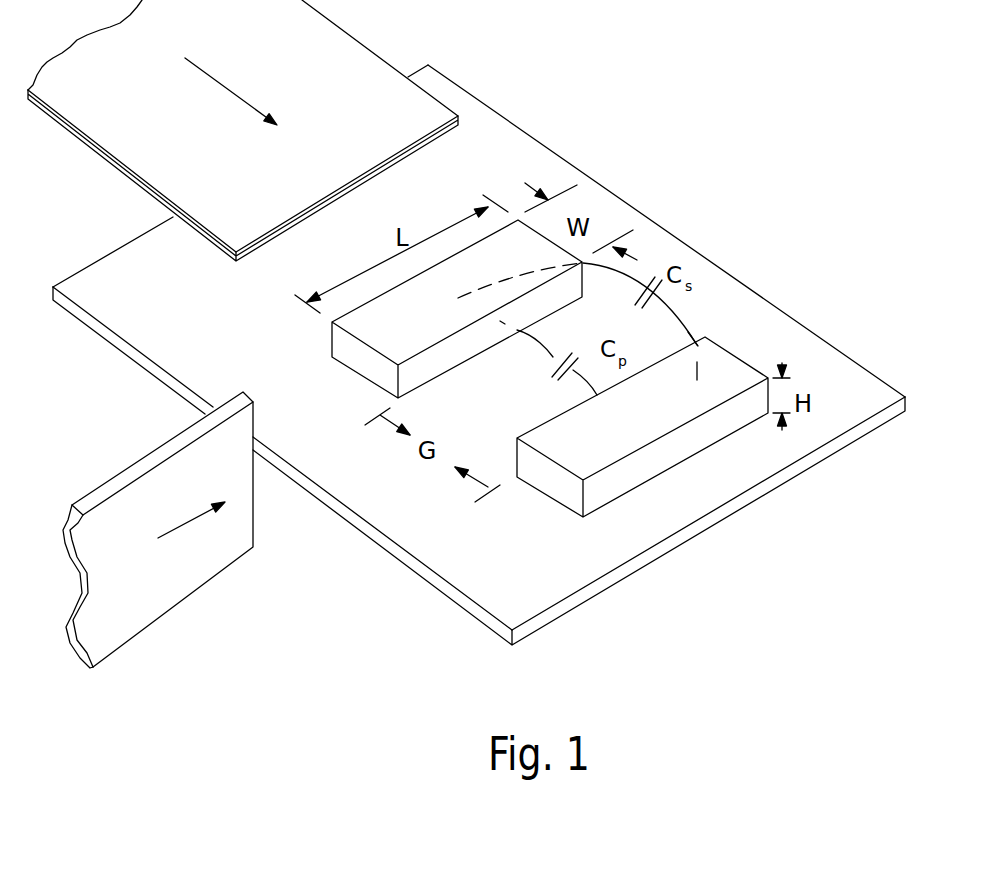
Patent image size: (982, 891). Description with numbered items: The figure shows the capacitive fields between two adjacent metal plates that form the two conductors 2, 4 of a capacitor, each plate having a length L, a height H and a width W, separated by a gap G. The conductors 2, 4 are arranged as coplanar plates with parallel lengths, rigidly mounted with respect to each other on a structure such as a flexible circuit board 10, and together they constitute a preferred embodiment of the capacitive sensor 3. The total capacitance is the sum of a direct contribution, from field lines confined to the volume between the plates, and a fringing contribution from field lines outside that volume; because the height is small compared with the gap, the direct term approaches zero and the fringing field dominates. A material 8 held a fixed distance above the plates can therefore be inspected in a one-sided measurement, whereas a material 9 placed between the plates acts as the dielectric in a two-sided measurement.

The conductor 2 is at (746, 354).
The capacitive sensor 3 is at (310, 594).
The conductor 4 is at (600, 146).
The material 8 is at (243, 130).
The material to be inspected 9 is at (158, 530).
The flexible circuit board 10 is at (479, 355).